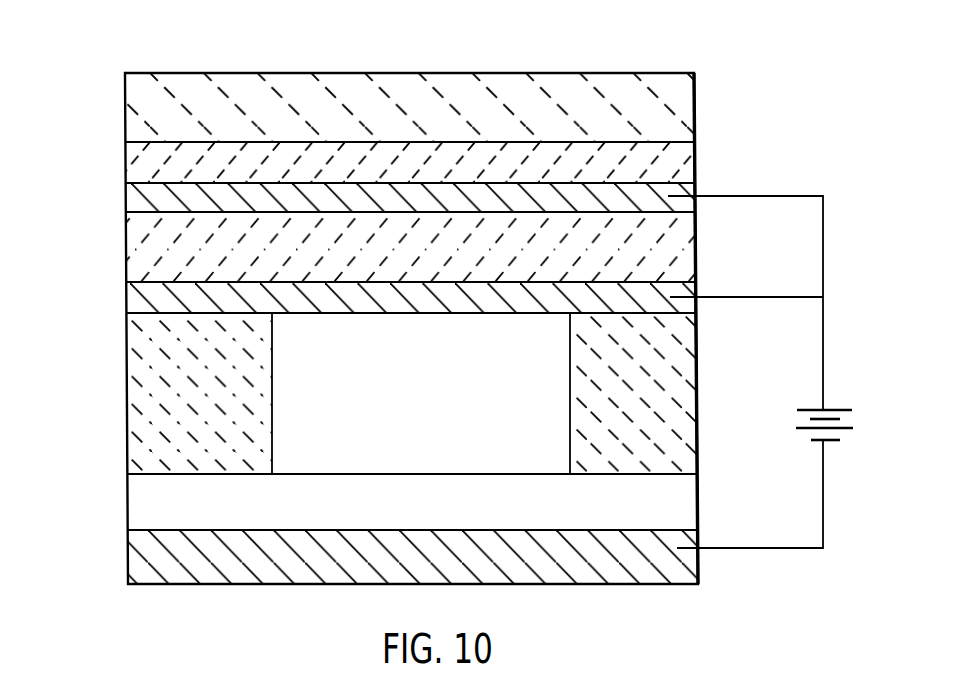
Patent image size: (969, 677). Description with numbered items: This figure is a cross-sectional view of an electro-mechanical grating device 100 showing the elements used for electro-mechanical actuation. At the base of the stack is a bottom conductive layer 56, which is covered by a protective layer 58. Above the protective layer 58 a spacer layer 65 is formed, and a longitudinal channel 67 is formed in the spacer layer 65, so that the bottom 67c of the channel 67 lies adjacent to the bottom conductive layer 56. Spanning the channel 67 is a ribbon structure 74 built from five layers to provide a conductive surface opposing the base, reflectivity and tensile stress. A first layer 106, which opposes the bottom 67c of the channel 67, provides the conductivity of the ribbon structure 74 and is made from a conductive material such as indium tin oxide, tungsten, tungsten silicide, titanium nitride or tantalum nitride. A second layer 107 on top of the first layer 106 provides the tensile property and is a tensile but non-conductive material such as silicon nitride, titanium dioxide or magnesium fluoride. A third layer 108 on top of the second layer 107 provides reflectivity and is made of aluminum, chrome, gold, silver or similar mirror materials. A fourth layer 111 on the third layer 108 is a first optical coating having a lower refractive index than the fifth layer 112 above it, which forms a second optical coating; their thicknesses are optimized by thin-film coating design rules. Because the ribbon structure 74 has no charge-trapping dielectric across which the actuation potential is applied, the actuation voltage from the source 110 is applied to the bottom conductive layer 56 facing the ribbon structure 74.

The electro-mechanical grating device 100 is at (133, 67).
The ribbon structure 74 is at (107, 175).
The fifth layer 112 is at (690, 94).
The fourth layer 111 is at (694, 152).
The third layer 108 is at (689, 188).
The second layer 107 is at (687, 235).
The first layer 106 is at (689, 290).
The spacer layer 65 is at (700, 415).
The channel 67 is at (486, 383).
The bottom of the channel 67c is at (404, 474).
The protective layer 58 is at (699, 502).
The bottom conductive layer 56 is at (700, 563).
The source 110 is at (825, 303).